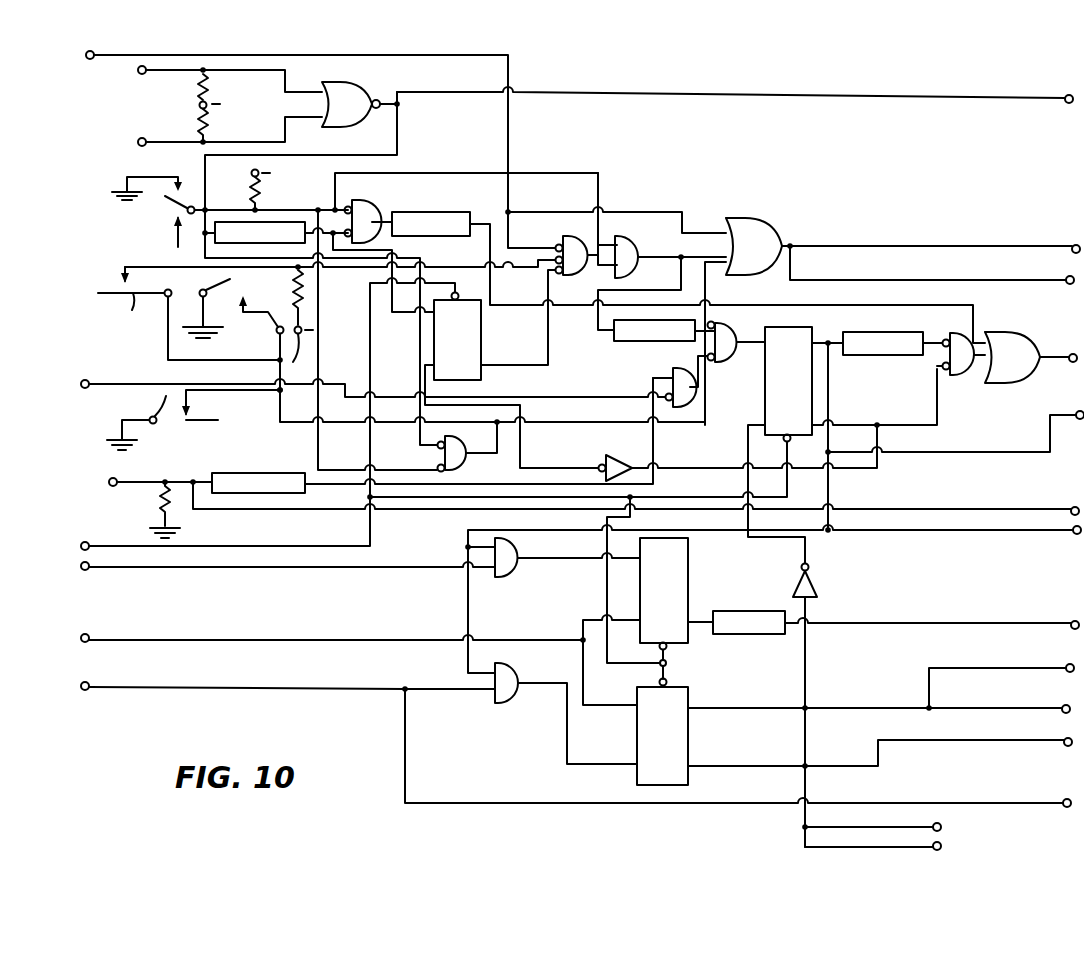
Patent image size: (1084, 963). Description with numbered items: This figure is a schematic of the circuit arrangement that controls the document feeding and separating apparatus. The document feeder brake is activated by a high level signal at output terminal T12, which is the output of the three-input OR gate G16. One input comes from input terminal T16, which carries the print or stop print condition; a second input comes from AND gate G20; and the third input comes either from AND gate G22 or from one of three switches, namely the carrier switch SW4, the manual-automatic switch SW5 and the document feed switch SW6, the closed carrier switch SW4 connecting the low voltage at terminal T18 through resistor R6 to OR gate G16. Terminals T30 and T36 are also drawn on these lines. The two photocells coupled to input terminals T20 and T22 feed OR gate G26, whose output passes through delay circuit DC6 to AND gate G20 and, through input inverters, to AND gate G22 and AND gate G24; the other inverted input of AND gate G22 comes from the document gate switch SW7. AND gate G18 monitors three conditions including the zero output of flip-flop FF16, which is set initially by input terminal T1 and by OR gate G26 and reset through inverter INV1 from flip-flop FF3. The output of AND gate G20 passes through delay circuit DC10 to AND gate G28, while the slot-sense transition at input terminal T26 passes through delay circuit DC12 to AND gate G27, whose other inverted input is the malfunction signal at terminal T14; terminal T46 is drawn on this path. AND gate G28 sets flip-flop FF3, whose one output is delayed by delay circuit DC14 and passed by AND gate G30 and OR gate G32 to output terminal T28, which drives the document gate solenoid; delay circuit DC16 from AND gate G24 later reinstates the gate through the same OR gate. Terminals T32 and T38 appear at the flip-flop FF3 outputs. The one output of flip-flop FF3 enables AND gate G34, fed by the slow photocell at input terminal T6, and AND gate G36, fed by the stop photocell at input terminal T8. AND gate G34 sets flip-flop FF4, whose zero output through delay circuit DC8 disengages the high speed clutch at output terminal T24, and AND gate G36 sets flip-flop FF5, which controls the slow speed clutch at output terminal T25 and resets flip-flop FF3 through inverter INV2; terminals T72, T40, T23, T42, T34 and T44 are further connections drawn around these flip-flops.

The input terminal T16 is at (86, 53).
The input terminal T20 is at (138, 72).
The input terminal T22 is at (140, 139).
The OR gate G26 is at (356, 88).
The terminal T30 is at (1068, 95).
The document gate switch SW7 is at (168, 204).
The delay circuit DC6 is at (266, 222).
The AND gate G24 is at (366, 205).
The delay circuit DC16 is at (418, 212).
The AND gate G18 is at (580, 236).
The AND gate G20 is at (628, 240).
The OR gate G16 is at (770, 232).
The output terminal T12 is at (1075, 245).
The terminal T36 is at (1067, 278).
The carrier switch SW4 is at (132, 300).
The manual-automatic switch SW5 is at (232, 295).
The resistor R6 is at (292, 300).
The terminal T18 is at (294, 379).
The terminal T14 is at (81, 382).
The document feed switch SW6 is at (163, 406).
The delay circuit DC12 is at (260, 473).
The input terminal T26 is at (109, 481).
The terminal T46 is at (1075, 507).
The input terminal T1 is at (82, 544).
The flip-flop FF16 is at (482, 374).
The inverter INV1 is at (618, 462).
The AND gate G22 is at (458, 464).
The delay circuit DC10 is at (660, 342).
The AND gate G27 is at (694, 370).
The AND gate G28 is at (732, 330).
The flip-flop FF3 is at (764, 378).
The delay circuit DC14 is at (862, 355).
The AND gate G30 is at (962, 376).
The OR gate G32 is at (1012, 338).
The output terminal T28 is at (1071, 362).
The terminal T32 is at (1079, 419).
The terminal T38 is at (1076, 534).
The AND gate G34 is at (514, 570).
The input terminal T6 is at (81, 568).
The terminal T72 is at (81, 637).
The input terminal T8 is at (81, 684).
The AND gate G36 is at (506, 702).
The flip-flop FF4 is at (700, 580).
The inverter INV2 is at (818, 582).
The delay circuit DC8 is at (766, 611).
The output terminal T24 is at (1073, 621).
The terminal T40 is at (1068, 664).
The flip-flop FF5 is at (694, 750).
The terminal T23 is at (1064, 705).
The output terminal T25 is at (1066, 746).
The terminal T42 is at (1064, 799).
The terminal T34 is at (941, 826).
The terminal T44 is at (941, 846).